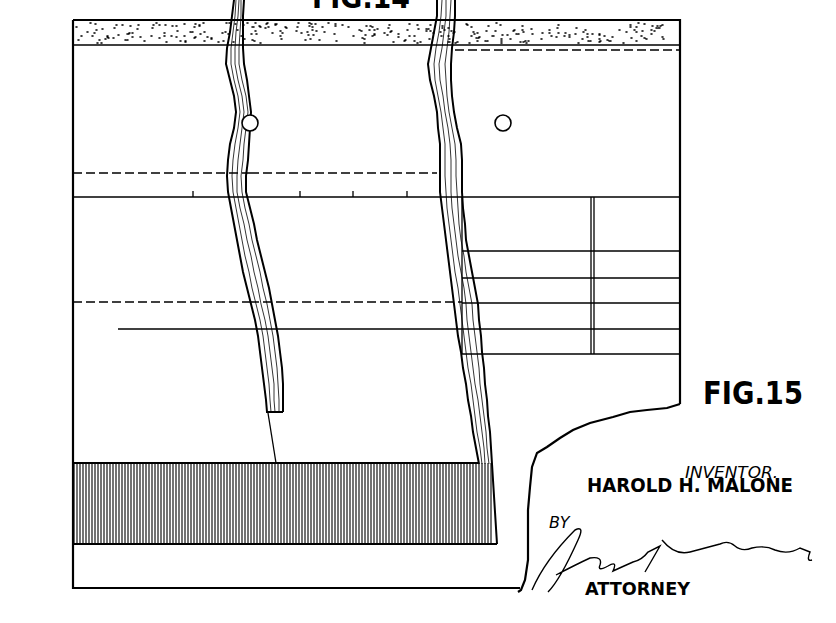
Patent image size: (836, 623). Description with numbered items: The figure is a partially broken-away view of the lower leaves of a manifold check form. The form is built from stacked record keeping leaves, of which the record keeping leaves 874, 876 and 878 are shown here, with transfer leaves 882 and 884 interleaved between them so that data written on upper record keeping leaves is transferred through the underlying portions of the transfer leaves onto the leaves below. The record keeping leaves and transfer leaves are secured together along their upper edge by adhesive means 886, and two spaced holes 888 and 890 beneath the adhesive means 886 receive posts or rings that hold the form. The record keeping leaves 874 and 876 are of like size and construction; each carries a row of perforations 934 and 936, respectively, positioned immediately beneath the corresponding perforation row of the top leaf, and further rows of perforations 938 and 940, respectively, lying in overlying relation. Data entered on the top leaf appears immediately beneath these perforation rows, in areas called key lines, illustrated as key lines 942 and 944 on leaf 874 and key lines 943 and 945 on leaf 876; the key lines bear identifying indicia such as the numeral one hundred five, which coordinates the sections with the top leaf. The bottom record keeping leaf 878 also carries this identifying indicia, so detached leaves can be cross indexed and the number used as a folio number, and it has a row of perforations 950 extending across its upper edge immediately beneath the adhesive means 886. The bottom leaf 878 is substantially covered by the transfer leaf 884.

The record keeping leaf 874 is at (92, 433).
The record keeping leaf 876 is at (341, 451).
The record keeping leaf 878 is at (618, 404).
The transfer leaf 882 is at (245, 252).
The transfer leaf 884 is at (450, 527).
The adhesive means 886 is at (188, 37).
The hole 888 is at (257, 118).
The hole 890 is at (526, 117).
The row of perforations 934 is at (80, 173).
The row of perforations 936 is at (300, 173).
The row of perforations 938 is at (89, 302).
The row of perforations 940 is at (378, 300).
The key line 942 is at (80, 184).
The key line 943 is at (428, 187).
The key line 944 is at (80, 314).
The key line 945 is at (428, 320).
The row of perforations 950 is at (612, 52).